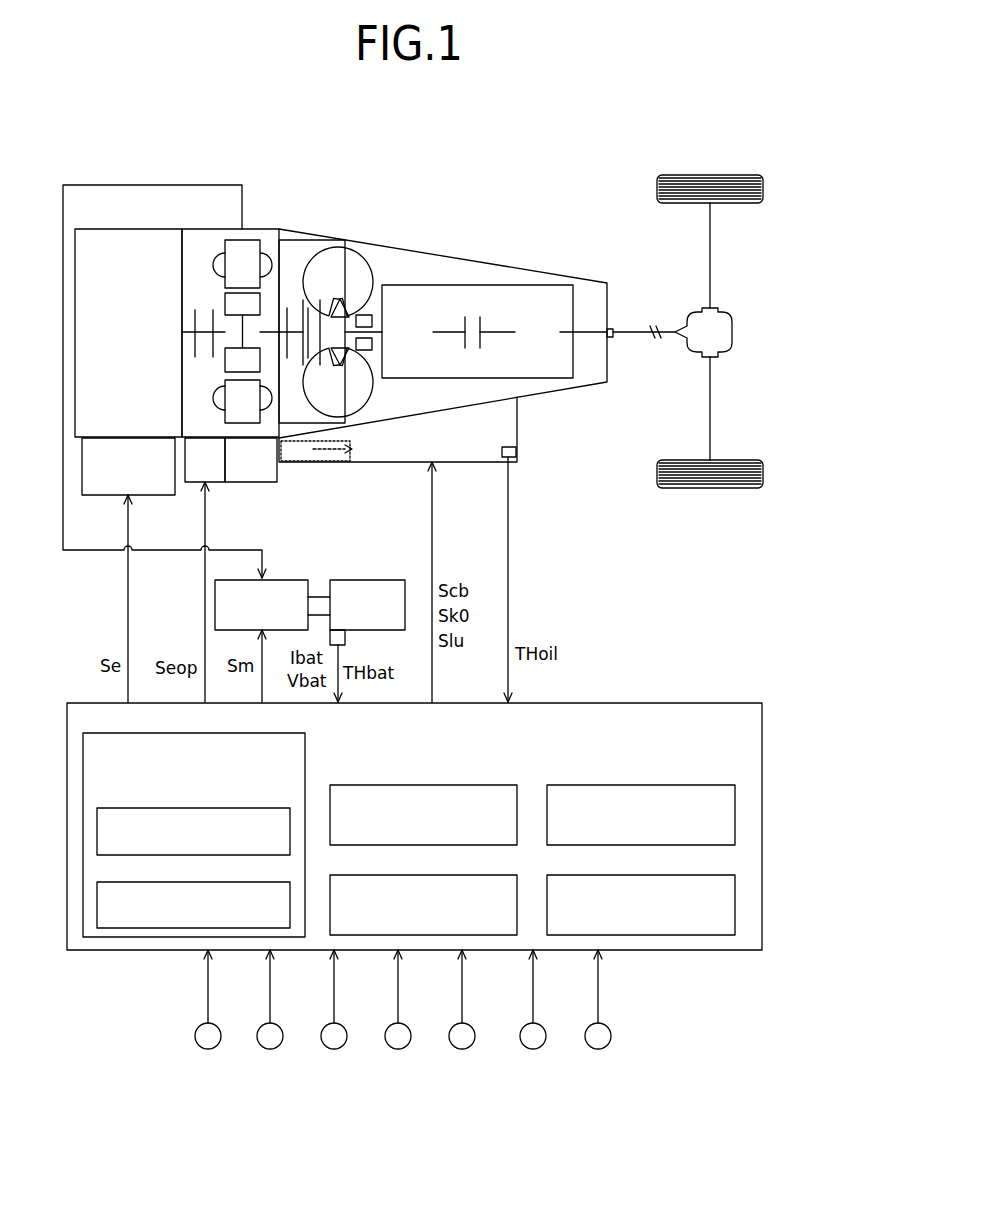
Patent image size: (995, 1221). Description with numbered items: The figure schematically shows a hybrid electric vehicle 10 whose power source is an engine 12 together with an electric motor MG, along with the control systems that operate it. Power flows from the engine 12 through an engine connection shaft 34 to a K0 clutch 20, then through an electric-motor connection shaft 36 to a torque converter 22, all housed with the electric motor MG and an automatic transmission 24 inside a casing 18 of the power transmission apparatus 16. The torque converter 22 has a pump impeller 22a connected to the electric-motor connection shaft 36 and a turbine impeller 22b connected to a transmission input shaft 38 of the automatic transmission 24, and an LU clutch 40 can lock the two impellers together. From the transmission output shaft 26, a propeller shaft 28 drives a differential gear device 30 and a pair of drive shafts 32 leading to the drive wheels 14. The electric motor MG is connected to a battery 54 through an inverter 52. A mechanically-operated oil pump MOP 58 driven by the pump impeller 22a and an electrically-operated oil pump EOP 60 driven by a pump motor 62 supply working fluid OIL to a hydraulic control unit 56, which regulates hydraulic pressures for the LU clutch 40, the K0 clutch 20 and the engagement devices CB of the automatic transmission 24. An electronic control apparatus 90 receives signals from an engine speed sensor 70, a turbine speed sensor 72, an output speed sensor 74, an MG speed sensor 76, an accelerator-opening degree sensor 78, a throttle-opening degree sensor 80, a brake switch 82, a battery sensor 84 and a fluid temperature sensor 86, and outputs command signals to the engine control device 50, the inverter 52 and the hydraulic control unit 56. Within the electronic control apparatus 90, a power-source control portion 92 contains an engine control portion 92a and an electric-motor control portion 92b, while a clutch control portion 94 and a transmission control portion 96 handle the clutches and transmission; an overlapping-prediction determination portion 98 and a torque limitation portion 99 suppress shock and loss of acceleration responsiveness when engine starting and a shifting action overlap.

The vehicle 10 is at (562, 128).
The engine 12 is at (113, 227).
The drive wheels 14 is at (657, 193).
The power transmission apparatus 16 is at (378, 178).
The casing 18 is at (239, 222).
The K0 clutch 20 is at (194, 356).
The torque converter 22 is at (379, 250).
The pump impeller 22a is at (356, 400).
The turbine impeller 22b is at (313, 392).
The automatic transmission 24 is at (537, 286).
The transmission output shaft 26 is at (572, 328).
The propeller shaft 28 is at (635, 336).
The differential gear device 30 is at (717, 325).
The drive shafts 32 is at (712, 256).
The engine connection shaft 34 is at (189, 330).
The electric-motor connection shaft 36 is at (224, 330).
The transmission input shaft 38 is at (385, 323).
The LU clutch 40 is at (288, 322).
The engine control device 50 is at (150, 496).
The inverter 52 is at (268, 590).
The battery 54 is at (362, 590).
The hydraulic control unit 56 is at (505, 411).
The MOP 58 is at (368, 350).
The EOP 60 is at (263, 483).
The pump motor 62 is at (214, 483).
The engine speed sensor 70 is at (214, 1047).
The turbine speed sensor 72 is at (276, 1047).
The output speed sensor 74 is at (340, 1047).
The MG speed sensor 76 is at (404, 1047).
The accelerator-opening degree sensor 78 is at (468, 1047).
The throttle-opening degree sensor 80 is at (539, 1047).
The brake switch 82 is at (604, 1047).
The battery sensor 84 is at (347, 638).
The fluid temperature sensor 86 is at (515, 454).
The electronic control apparatus 90 is at (695, 713).
The power-source control portion 92 is at (257, 743).
The engine control portion 92a is at (223, 817).
The electric-motor control portion 92b is at (223, 890).
The clutch control portion 94 is at (473, 793).
The transmission control portion 96 is at (473, 883).
The overlapping-prediction determination portion 98 is at (687, 795).
The torque limitation portion 99 is at (687, 883).